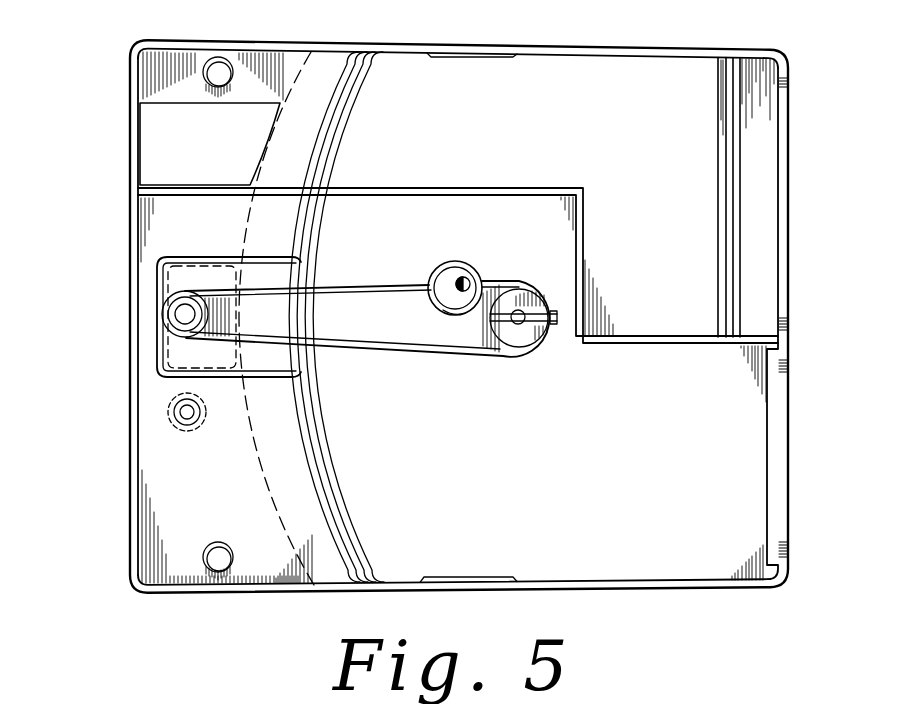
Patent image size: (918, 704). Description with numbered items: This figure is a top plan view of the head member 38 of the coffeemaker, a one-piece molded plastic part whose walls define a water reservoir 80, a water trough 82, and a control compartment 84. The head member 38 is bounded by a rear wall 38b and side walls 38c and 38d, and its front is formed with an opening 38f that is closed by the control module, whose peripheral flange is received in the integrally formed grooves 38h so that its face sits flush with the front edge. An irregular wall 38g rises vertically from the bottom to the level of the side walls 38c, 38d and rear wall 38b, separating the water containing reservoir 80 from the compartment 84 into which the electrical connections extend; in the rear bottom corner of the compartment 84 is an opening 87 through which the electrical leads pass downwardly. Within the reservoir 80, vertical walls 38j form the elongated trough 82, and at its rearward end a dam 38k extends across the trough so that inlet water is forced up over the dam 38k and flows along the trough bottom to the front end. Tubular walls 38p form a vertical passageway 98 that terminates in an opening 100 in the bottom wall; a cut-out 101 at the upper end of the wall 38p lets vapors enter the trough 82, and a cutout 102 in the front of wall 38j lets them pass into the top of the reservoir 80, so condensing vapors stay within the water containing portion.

The head member 38 is at (790, 278).
The rear wall 38b is at (130, 291).
The side wall 38c is at (596, 590).
The side wall 38d is at (380, 41).
The opening 38f is at (788, 84).
The irregular wall 38g is at (488, 188).
The grooves 38h is at (716, 78).
The vertical walls 38j is at (375, 287).
The dam 38k is at (215, 300).
The tubular walls 38p is at (446, 262).
The water reservoir 80 is at (501, 479).
The water trough 82 is at (406, 324).
The control compartment 84 is at (592, 134).
The opening 87 is at (211, 152).
The passageway 98 is at (462, 281).
The opening 100 is at (468, 279).
The opening 101 is at (453, 316).
The opening 102 is at (557, 323).